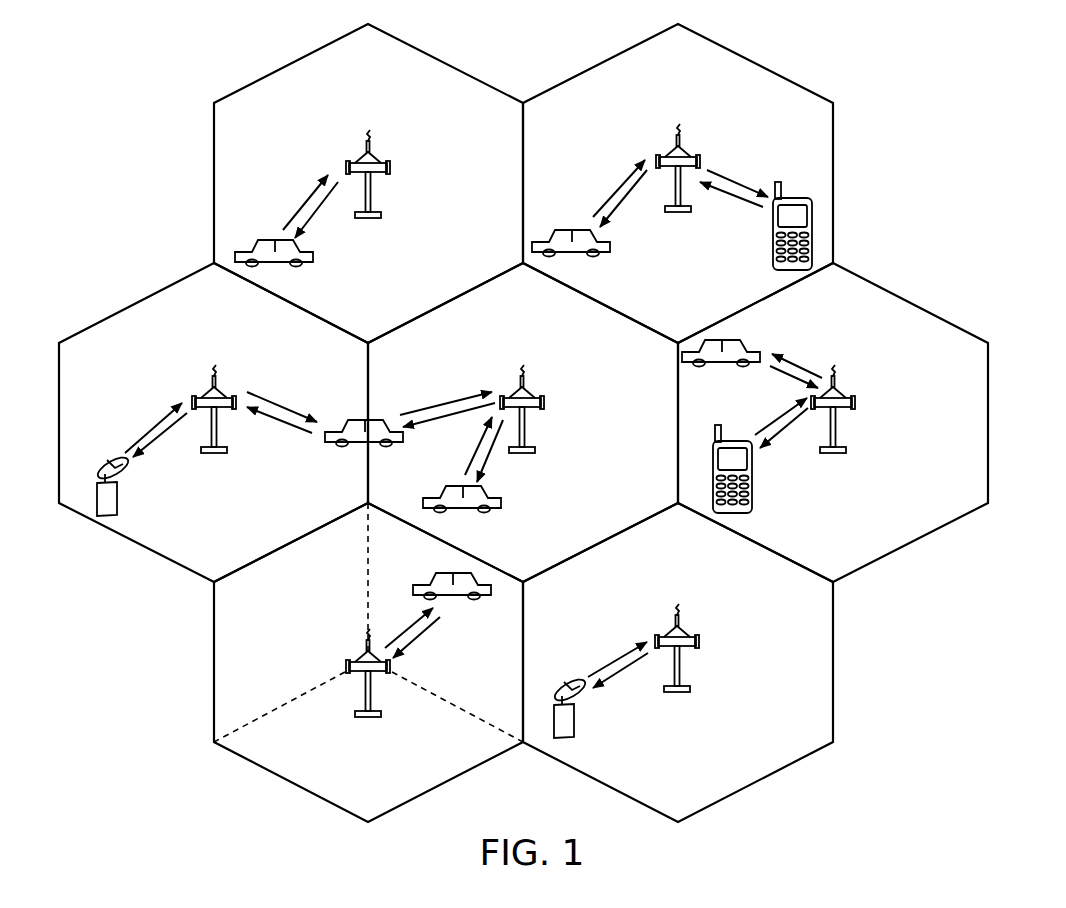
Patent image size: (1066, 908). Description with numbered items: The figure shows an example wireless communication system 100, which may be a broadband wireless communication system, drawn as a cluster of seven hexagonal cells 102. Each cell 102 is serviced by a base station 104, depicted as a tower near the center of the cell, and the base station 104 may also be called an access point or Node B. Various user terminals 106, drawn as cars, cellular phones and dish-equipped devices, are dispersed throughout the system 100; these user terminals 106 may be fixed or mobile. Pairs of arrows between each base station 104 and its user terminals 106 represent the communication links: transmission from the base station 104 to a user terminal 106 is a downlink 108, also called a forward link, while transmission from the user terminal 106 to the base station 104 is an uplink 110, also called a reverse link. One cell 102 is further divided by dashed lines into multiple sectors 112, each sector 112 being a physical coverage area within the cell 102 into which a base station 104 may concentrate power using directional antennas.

The wireless communication system 100 is at (962, 122).
The cell 102 is at (300, 57).
The base station 104 is at (347, 662).
The user terminal 106 is at (315, 267).
The downlink 108 is at (315, 213).
The uplink 110 is at (307, 200).
The sector 112 is at (423, 778).